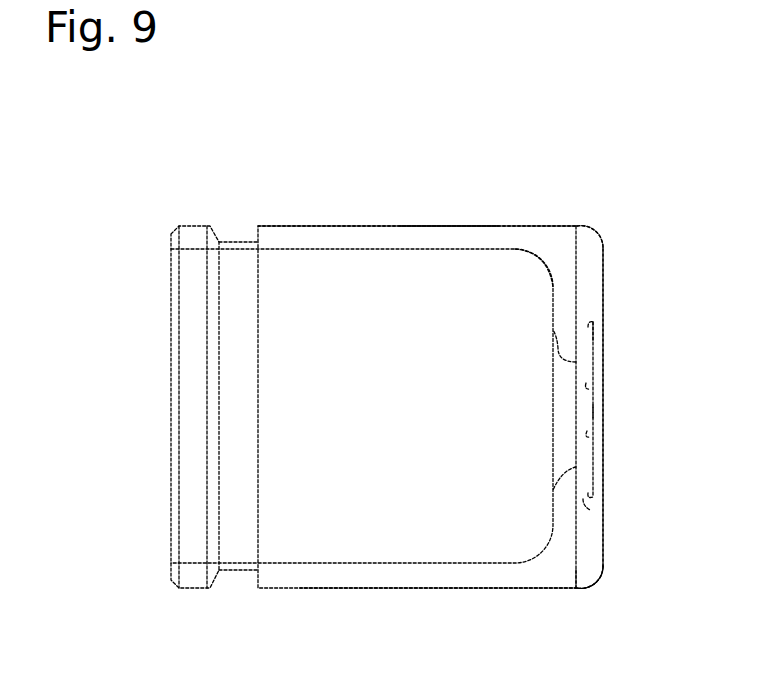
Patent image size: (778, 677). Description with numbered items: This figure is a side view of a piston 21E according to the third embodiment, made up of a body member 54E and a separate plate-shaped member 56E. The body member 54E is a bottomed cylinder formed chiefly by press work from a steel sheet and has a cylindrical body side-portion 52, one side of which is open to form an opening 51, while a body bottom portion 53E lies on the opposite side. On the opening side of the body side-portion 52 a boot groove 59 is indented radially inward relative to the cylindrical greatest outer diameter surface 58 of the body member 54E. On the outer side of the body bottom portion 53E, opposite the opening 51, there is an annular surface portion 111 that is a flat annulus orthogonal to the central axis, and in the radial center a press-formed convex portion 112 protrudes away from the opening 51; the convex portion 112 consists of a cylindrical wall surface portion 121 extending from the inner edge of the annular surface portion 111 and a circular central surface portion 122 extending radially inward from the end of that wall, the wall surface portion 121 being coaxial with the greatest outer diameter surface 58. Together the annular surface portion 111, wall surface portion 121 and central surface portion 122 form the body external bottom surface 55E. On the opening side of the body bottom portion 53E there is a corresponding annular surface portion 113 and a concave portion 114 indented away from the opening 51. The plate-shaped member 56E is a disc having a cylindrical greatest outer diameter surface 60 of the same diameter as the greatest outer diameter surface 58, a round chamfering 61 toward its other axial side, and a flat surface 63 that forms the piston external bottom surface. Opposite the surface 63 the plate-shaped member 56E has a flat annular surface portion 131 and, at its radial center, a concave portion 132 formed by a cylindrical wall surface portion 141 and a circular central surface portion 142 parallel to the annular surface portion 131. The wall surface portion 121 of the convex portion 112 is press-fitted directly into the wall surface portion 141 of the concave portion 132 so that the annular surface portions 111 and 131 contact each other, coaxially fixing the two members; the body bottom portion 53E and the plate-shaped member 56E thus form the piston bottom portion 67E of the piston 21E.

The piston 21E is at (584, 157).
The opening 51 is at (170, 252).
The body side-portion 52 is at (380, 240).
The body bottom portion 53E is at (566, 290).
The body member 54E is at (447, 216).
The body external bottom surface 55E is at (577, 532).
The plate-shaped member 56E is at (603, 297).
The greatest outer diameter surface 58 is at (330, 226).
The boot groove 59 is at (238, 240).
The greatest outer diameter surface 60 is at (577, 596).
The round chamfering 61 is at (601, 586).
The surface 63 is at (597, 489).
The piston bottom portion 67E is at (603, 245).
The annular surface portion 111 is at (577, 558).
The convex portion 112 is at (594, 412).
The annular surface portion 113 is at (516, 249).
The concave portion 114 is at (576, 362).
The wall surface portion 121 is at (590, 510).
The central surface portion 122 is at (576, 467).
The annular surface portion 131 is at (576, 262).
The concave portion 132 is at (590, 437).
The wall surface portion 141 is at (594, 326).
The central surface portion 142 is at (590, 389).